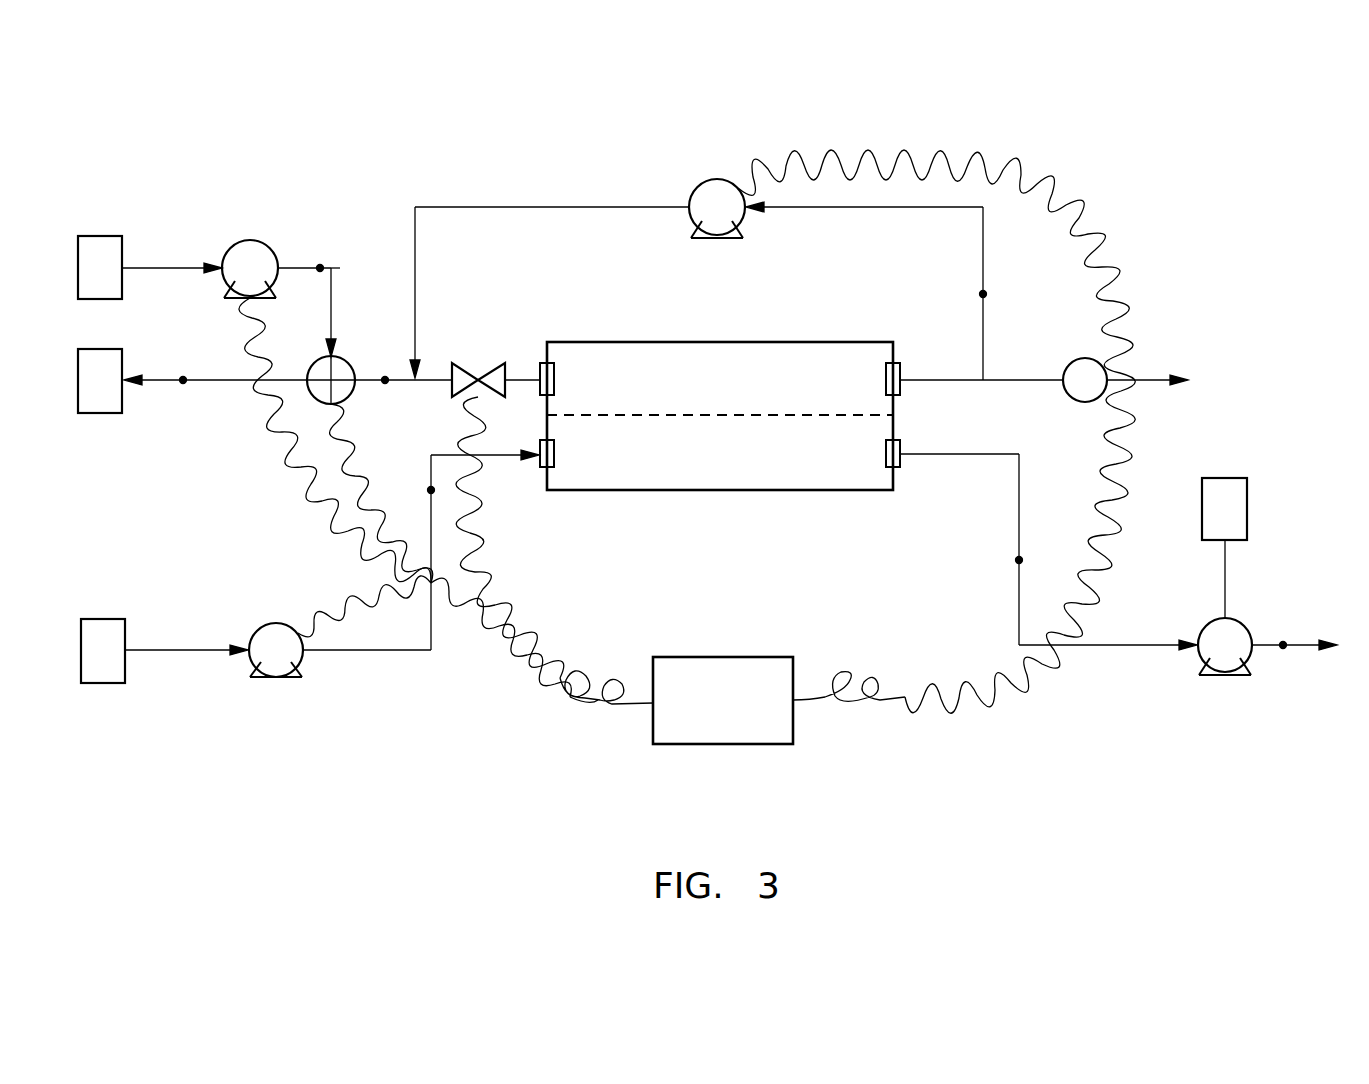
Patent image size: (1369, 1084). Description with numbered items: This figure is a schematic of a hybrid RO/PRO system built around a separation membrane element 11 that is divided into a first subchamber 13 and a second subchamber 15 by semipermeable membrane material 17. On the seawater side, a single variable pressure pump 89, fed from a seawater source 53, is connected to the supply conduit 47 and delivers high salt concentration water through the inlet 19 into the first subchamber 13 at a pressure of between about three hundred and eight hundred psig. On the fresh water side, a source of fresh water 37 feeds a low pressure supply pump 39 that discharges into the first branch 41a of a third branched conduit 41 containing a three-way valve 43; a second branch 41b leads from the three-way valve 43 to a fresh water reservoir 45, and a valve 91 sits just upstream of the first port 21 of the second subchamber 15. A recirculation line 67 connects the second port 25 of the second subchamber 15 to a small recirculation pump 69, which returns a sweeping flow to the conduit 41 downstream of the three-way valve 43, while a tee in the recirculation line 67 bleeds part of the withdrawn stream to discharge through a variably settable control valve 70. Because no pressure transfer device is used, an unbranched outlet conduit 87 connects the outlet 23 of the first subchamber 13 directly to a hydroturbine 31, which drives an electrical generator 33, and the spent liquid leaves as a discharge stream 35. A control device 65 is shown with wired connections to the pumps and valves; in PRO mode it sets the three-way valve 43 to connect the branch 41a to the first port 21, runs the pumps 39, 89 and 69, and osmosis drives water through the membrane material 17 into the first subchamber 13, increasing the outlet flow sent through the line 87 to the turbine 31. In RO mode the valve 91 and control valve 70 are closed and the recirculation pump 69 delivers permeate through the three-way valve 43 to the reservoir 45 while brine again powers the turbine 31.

The separation membrane element 11 is at (597, 341).
The first subchamber 13 is at (708, 478).
The second subchamber 15 is at (708, 408).
The semipermeable membrane material 17 is at (621, 414).
The inlet 19 is at (543, 468).
The first port 21 is at (543, 396).
The outlet 23 is at (901, 446).
The second port 25 is at (901, 370).
The hydroturbine 31 is at (1213, 658).
The electrical generator 33 is at (1213, 522).
The discharge stream 35 is at (1283, 642).
The source of fresh water 37 is at (88, 281).
The low pressure pump 39 is at (238, 281).
The third branched conduit 41 is at (385, 383).
The first branch 41a is at (321, 265).
The second branch 41b is at (183, 383).
The three-way valve 43 is at (343, 399).
The fresh water reservoir 45 is at (88, 394).
The supply conduit 47 is at (429, 490).
The salt water source 53 is at (91, 664).
The control device 65 is at (711, 708).
The recirculation line 67 is at (986, 294).
The recirculation pump 69 is at (705, 220).
The control valve 70 is at (1085, 358).
The unbranched outlet conduit 87 is at (1022, 560).
The variable pressure pump 89 is at (264, 663).
The valve 91 is at (452, 362).